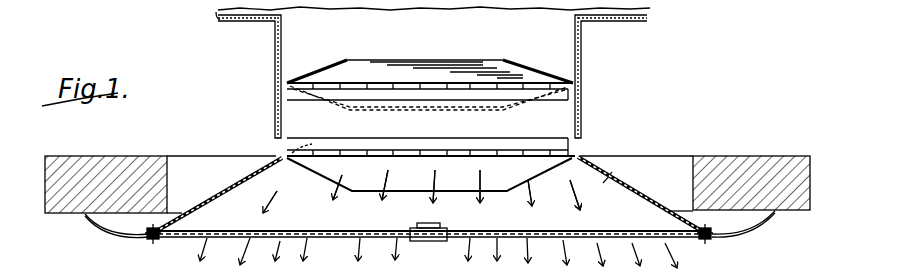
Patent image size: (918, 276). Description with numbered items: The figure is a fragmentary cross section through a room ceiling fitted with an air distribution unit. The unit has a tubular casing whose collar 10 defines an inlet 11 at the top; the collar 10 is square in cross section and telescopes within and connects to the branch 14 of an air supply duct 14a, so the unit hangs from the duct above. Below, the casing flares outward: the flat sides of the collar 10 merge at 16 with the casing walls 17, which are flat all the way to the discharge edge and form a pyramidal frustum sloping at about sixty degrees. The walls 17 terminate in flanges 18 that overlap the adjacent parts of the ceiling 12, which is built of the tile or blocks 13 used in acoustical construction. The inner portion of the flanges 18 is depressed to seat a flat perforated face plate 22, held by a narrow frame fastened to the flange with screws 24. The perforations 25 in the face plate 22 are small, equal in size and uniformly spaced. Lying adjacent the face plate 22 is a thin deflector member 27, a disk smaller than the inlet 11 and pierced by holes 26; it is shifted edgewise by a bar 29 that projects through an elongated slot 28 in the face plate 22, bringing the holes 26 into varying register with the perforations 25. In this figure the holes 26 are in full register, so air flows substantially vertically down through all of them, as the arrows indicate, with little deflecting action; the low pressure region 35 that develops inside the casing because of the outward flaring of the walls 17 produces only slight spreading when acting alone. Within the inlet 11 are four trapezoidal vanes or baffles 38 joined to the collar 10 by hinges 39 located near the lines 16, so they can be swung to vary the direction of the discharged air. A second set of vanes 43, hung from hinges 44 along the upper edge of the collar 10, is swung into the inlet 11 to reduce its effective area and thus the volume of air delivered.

The collar 10 is at (273, 132).
The inlet 11 is at (434, 22).
The ceiling 12 is at (70, 215).
The tile or blocks 13 is at (91, 163).
The branch 14 is at (275, 54).
The air supply duct 14a is at (248, 24).
The merging line of collar and casing walls 16 is at (585, 157).
The casing walls 17 is at (214, 196).
The flanges 18 is at (115, 235).
The face plate 22 is at (227, 231).
The screws 24 is at (155, 239).
The perforations 25 is at (352, 226).
The holes 26 is at (366, 228).
The deflector member 27 is at (400, 228).
The elongated slot 28 is at (456, 238).
The bar 29 is at (430, 240).
The low pressure region 35 is at (602, 183).
The vanes or baffles 38 is at (325, 177).
The hinges 39 is at (326, 153).
The vanes 43 is at (367, 60).
The hinges 44 is at (286, 83).